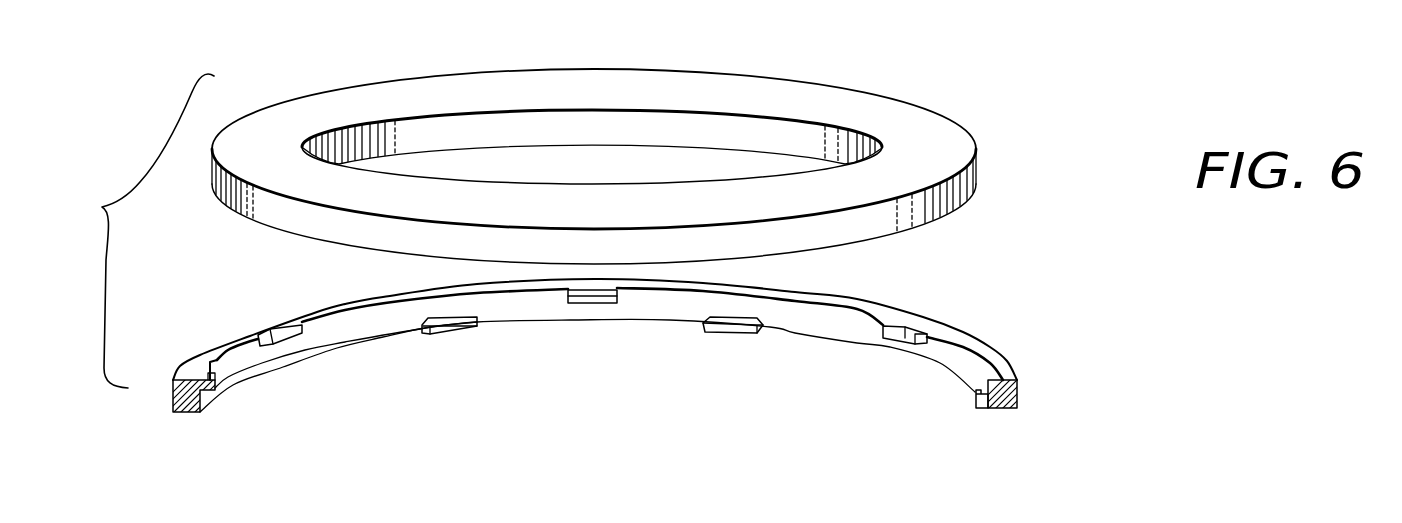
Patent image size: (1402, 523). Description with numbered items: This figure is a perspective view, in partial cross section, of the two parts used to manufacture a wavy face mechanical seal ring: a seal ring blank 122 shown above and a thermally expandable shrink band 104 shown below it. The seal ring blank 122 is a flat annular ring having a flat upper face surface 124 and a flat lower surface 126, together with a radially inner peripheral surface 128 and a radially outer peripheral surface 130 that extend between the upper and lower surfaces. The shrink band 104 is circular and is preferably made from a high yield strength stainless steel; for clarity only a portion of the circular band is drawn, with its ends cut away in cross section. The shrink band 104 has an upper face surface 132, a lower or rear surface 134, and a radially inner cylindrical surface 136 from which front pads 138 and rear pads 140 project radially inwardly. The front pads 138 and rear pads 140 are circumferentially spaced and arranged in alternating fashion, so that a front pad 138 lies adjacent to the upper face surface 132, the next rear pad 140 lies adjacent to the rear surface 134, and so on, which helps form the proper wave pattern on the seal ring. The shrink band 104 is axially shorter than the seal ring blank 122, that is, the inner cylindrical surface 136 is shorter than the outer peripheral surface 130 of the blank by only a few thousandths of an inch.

The shrink band 104 is at (972, 330).
The seal ring blank 122 is at (910, 131).
The upper face surface 124 is at (786, 87).
The lower surface 126 is at (673, 150).
The radially inner peripheral surface 128 is at (596, 122).
The radially outer peripheral surface 130 is at (284, 215).
The upper face surface 132 is at (1003, 372).
The rear surface 134 is at (1003, 410).
The radially inner cylindrical surface 136 is at (808, 313).
The front pads 138 is at (289, 346).
The rear pads 140 is at (453, 334).